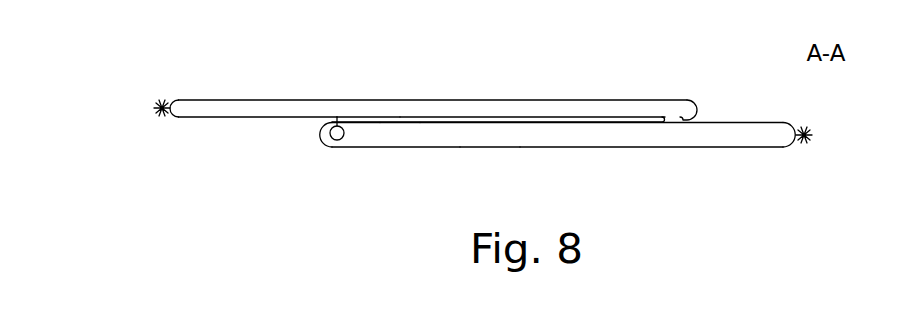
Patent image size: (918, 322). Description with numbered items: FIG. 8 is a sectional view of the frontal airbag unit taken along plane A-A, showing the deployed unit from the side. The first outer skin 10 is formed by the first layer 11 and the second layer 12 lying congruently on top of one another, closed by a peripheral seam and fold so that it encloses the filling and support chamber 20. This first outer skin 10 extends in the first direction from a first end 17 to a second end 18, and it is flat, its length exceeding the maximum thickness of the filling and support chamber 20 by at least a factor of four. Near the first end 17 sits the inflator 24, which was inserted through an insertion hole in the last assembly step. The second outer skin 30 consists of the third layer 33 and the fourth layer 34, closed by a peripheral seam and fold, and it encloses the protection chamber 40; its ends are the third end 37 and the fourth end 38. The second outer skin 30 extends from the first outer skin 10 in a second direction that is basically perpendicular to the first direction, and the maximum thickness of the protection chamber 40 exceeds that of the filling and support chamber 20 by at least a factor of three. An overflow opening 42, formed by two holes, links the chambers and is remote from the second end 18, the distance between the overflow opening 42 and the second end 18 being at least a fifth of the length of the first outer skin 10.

The first outer skin 10 is at (477, 100).
The first layer 11 is at (558, 116).
The second layer 12 is at (245, 99).
The first end 17 is at (295, 137).
The second end 18 is at (821, 143).
The filling and support chamber 20 is at (358, 108).
The inflator 24 is at (337, 141).
The second outer skin 30 is at (597, 148).
The third layer 33 is at (393, 123).
The fourth layer 34 is at (733, 147).
The third end 37 is at (733, 108).
The fourth end 38 is at (130, 108).
The protection chamber 40 is at (475, 132).
The overflow opening 42 is at (671, 116).